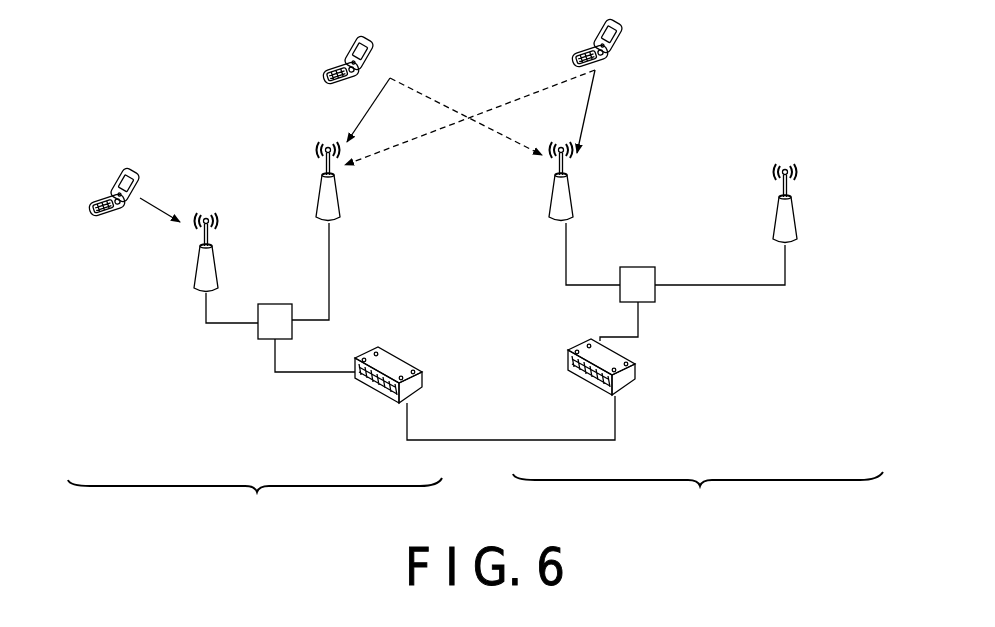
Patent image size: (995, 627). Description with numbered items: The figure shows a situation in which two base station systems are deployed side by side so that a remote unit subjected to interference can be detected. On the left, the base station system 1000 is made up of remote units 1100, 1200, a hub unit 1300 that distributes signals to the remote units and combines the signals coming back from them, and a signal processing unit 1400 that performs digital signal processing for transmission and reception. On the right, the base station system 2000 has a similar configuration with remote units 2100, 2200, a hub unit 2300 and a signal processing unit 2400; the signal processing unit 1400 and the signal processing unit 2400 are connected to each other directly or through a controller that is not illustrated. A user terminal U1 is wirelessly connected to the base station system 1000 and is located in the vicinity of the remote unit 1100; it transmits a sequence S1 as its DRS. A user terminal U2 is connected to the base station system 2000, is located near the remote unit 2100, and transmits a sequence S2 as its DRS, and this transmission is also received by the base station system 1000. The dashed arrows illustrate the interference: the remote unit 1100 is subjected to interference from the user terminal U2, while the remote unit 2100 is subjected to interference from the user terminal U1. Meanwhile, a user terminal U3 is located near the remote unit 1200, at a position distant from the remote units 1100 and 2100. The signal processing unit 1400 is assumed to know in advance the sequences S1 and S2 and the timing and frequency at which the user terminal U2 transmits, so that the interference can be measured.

The user terminal U1 is at (343, 48).
The user terminal U2 is at (614, 34).
The user terminal U3 is at (117, 178).
The remote unit 1100 is at (341, 196).
The remote unit 1200 is at (196, 269).
The hub unit 1300 is at (272, 303).
The signal processing unit 1400 is at (405, 356).
The remote unit 2100 is at (575, 196).
The remote unit 2200 is at (798, 215).
The hub unit 2300 is at (640, 267).
The signal processing unit 2400 is at (580, 386).
The sequence S1 is at (367, 107).
The sequence S2 is at (592, 107).
The base station system 1000 is at (255, 503).
The base station system 2000 is at (698, 497).